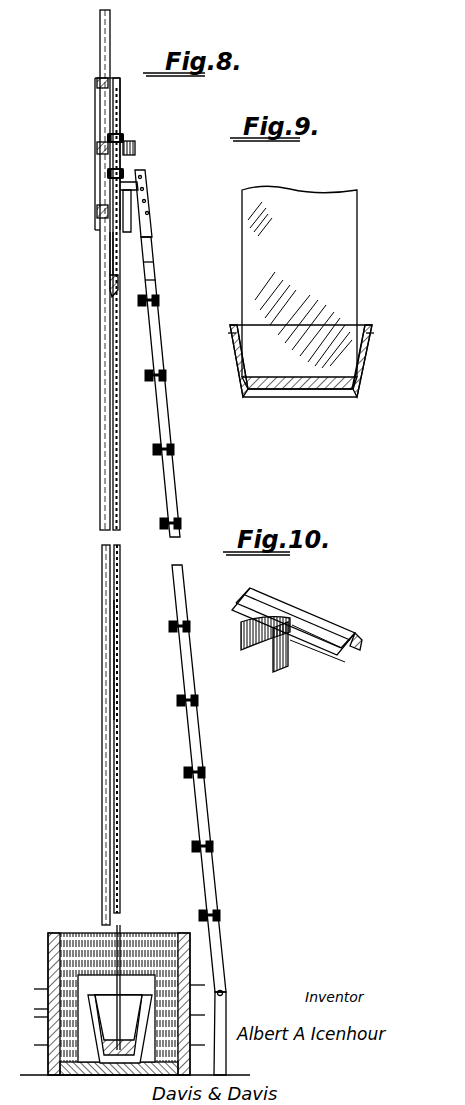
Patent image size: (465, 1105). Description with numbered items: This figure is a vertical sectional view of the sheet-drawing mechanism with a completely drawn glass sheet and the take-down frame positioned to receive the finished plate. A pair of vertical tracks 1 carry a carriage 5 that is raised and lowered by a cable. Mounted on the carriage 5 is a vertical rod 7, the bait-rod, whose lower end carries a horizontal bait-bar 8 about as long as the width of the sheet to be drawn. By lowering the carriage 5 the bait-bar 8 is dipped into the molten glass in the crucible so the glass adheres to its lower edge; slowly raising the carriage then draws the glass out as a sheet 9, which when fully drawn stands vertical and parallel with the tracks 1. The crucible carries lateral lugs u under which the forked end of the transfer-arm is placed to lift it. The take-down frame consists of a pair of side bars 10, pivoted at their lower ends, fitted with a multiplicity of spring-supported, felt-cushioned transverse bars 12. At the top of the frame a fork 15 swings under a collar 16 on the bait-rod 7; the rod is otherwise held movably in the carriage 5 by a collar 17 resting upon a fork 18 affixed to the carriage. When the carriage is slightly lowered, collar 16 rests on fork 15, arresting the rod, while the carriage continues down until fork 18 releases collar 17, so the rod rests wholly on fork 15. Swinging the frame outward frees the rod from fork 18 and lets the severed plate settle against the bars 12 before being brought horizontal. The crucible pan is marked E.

In FIG. 8, the vertical tracks 1 is at (103, 437).
In FIG. 8, the carriage 5 is at (100, 212).
In FIG. 10, the carriage 5 is at (332, 620).
In FIG. 8, the vertical rod 7 is at (106, 250).
In FIG. 8, the bait-bar 8 is at (110, 283).
In FIG. 8, the sheet 9 is at (121, 665).
In FIG. 9, the sheet 9 is at (299, 281).
In FIG. 8, the side bars 10 is at (204, 803).
In FIG. 8, the transverse bars 12 is at (166, 532).
In FIG. 8, the fork 15 is at (140, 186).
In FIG. 8, the collar 16 is at (107, 173).
In FIG. 8, the collar 17 is at (119, 133).
In FIG. 8, the fork 18 is at (132, 141).
In FIG. 10, the fork 18 is at (285, 655).
In FIG. 8, the base pan E is at (74, 1076).
In FIG. 9, the base pan E is at (308, 397).
In FIG. 8, the lateral lugs u is at (70, 1010).
In FIG. 9, the lateral lugs u is at (231, 342).